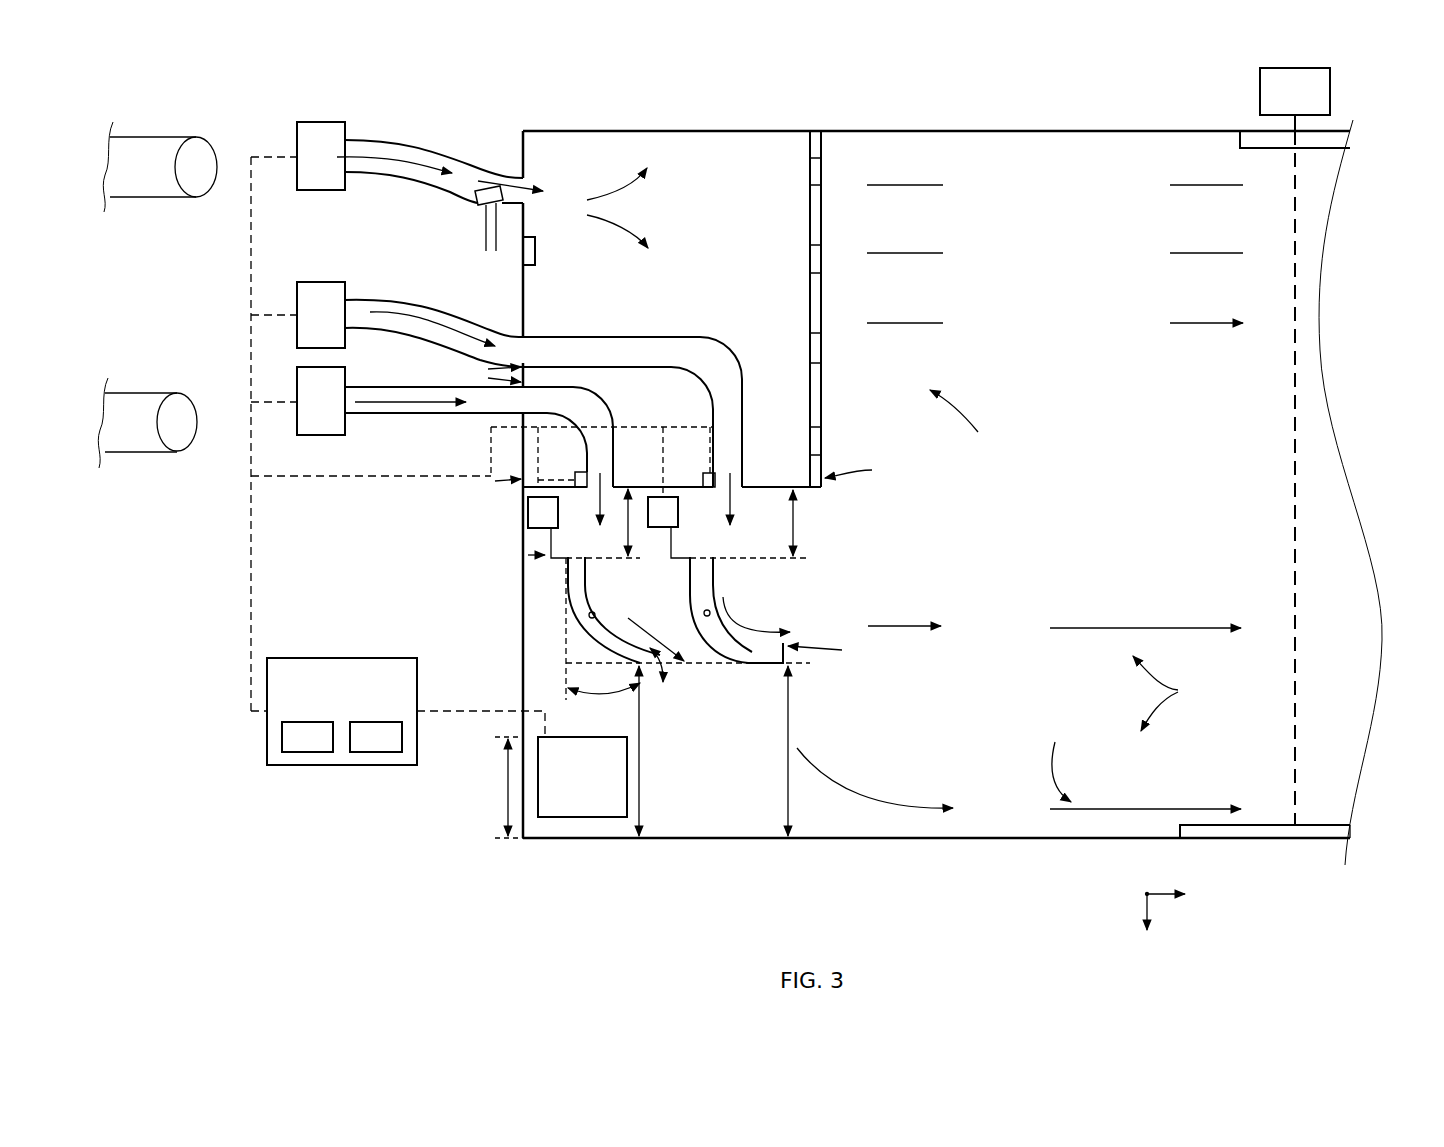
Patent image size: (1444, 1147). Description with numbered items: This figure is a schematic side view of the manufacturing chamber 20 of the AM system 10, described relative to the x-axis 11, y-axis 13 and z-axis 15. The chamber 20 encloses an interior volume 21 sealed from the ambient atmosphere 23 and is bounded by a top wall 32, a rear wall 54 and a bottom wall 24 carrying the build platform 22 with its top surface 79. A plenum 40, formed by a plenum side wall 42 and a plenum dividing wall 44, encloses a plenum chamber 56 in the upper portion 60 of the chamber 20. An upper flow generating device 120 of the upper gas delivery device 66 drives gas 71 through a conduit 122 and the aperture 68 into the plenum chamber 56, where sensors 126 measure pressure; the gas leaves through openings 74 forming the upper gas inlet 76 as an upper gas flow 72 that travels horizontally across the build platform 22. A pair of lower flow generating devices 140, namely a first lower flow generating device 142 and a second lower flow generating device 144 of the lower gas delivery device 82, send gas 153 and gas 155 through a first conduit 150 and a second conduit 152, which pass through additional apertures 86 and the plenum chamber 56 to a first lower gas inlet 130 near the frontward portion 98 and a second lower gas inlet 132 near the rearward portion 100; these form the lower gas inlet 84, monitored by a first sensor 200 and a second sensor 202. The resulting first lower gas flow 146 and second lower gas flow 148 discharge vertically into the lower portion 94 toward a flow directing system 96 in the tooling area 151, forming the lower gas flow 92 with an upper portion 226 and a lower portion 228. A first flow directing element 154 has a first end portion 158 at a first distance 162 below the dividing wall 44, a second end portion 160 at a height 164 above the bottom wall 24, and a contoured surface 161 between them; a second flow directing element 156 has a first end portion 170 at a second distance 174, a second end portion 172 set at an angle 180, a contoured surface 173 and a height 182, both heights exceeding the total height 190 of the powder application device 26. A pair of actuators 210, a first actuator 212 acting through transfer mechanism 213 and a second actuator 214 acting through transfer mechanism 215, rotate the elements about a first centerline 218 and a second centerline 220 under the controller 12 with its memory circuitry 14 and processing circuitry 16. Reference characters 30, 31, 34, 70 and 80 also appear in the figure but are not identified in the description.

The AM system 10 is at (1350, 98).
The x-axis 11 is at (1150, 893).
The controller 12 is at (335, 657).
The y-axis 13 is at (1147, 893).
The memory circuitry 14 is at (300, 722).
The z-axis 15 is at (1150, 910).
The processing circuitry 16 is at (370, 722).
The manufacturing chamber 20 is at (1087, 243).
The interior volume 21 is at (1087, 505).
The build platform 22 is at (1312, 830).
The ambient atmosphere 23 is at (957, 117).
The bottom wall 24 is at (870, 840).
The powder application device 26 is at (572, 818).
The sensor 30 is at (1258, 92).
The seat 31 is at (1310, 283).
The top wall 32 is at (885, 106).
The headliner 34 is at (1245, 135).
The plenum 40 is at (619, 165).
The plenum side wall 42 is at (823, 392).
The plenum dividing wall 44 is at (810, 489).
The rear wall 54 is at (521, 130).
The plenum chamber 56 is at (705, 277).
The upper portion 60 is at (1037, 165).
The upper gas delivery device 66 is at (158, 135).
The aperture 68 is at (516, 173).
The air handling system 70 is at (295, 104).
The gas 71 is at (420, 152).
The upper gas flow 72 is at (895, 187).
The plurality of openings 74 is at (808, 170).
The upper gas inlet 76 is at (962, 425).
The top surface 79 is at (1265, 827).
The second air handling system 80 is at (216, 472).
The lower gas delivery device 82 is at (138, 392).
The lower gas inlet 84 is at (527, 557).
The additional apertures 86 is at (488, 379).
The lower gas flow 92 is at (1171, 693).
The lower portion 94 is at (518, 853).
The flow directing system 96 is at (757, 720).
The frontward portion 98 is at (866, 465).
The rearward portion 100 is at (495, 484).
The upper flow generating device 120 is at (318, 122).
The conduit 122 is at (378, 135).
The sensors 126 is at (517, 262).
The first lower gas inlet 130 is at (748, 472).
The second lower gas inlet 132 is at (620, 485).
The pair of lower flow generating devices 140 is at (293, 325).
The first lower flow generating device 142 is at (318, 283).
The second lower flow generating device 144 is at (350, 385).
The first lower gas flow 146 is at (730, 470).
The second lower gas flow 148 is at (598, 483).
The first conduit 150 is at (408, 305).
The tooling area 151 is at (700, 806).
The second conduit 152 is at (395, 386).
The gas 153 is at (440, 328).
The first flow directing element 154 is at (705, 580).
The gas 155 is at (428, 415).
The second flow directing element 156 is at (578, 580).
The first end portion 158 is at (716, 552).
The second end portion 160 is at (835, 648).
The contoured surface 161 is at (740, 590).
The first distance 162 is at (797, 525).
The height 164 is at (792, 708).
The first end portion 170 is at (587, 555).
The second end portion 172 is at (665, 662).
The contoured surface 173 is at (610, 630).
The second distance 174 is at (632, 520).
The angle 180 is at (620, 695).
The height 182 is at (642, 762).
The total height 190 is at (505, 788).
The first sensor 200 is at (705, 472).
The second sensor 202 is at (527, 511).
The pair of actuators 210 is at (606, 562).
The first actuator 212 is at (680, 518).
The transfer mechanism 213 is at (690, 660).
The second actuator 214 is at (525, 522).
The transfer mechanism 215 is at (570, 575).
The first centerline 218 is at (725, 620).
The second centerline 220 is at (586, 610).
The upper portion 226 is at (1186, 612).
The lower portion 228 is at (1058, 758).